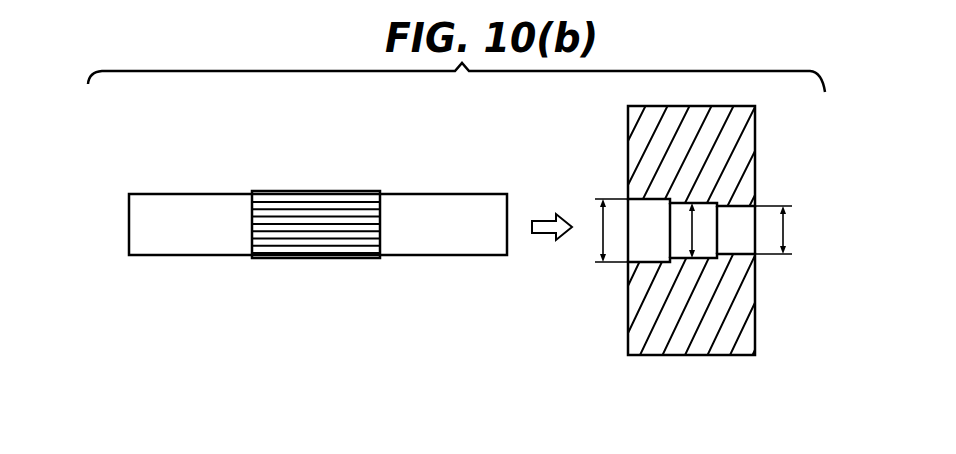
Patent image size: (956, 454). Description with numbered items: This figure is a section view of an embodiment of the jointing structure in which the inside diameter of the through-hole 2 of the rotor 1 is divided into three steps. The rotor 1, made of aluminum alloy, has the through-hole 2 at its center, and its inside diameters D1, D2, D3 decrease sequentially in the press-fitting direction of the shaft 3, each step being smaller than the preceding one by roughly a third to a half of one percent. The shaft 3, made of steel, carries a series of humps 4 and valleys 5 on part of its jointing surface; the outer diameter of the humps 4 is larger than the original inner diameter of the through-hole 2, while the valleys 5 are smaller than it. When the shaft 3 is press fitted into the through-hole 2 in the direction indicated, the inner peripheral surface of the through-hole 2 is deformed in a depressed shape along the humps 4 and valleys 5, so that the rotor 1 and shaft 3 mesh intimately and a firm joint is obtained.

The rotor 1 is at (744, 146).
The through-hole 2 is at (733, 254).
The shaft 3 is at (420, 242).
The hump 4 is at (316, 255).
The valley 5 is at (309, 232).
The first inside diameter D1 is at (600, 229).
The second inside diameter D2 is at (690, 231).
The third inside diameter D3 is at (786, 229).